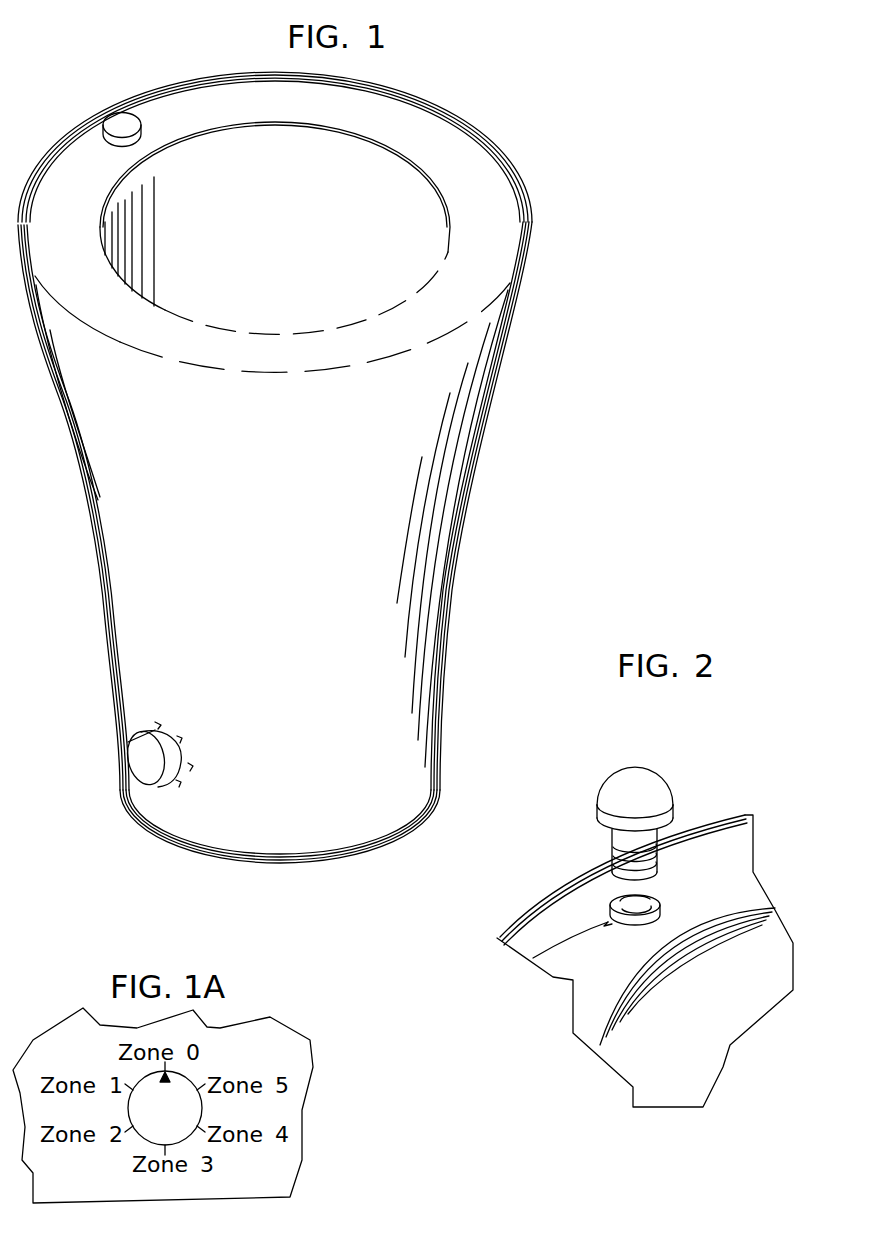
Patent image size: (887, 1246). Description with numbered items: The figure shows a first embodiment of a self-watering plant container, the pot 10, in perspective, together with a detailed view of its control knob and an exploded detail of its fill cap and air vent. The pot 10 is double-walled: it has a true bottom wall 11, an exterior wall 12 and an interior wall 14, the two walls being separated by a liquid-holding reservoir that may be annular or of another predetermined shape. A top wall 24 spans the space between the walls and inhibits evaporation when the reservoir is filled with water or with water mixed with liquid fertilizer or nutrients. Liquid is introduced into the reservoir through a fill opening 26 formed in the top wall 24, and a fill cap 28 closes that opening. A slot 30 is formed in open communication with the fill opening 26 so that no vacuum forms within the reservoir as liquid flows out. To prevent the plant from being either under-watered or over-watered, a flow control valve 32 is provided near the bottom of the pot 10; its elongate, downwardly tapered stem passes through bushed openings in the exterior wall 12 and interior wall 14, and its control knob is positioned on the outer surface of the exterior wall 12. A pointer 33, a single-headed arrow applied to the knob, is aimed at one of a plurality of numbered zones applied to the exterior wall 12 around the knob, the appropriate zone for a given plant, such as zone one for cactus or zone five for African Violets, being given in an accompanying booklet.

In FIG. 1, the pot 10 is at (614, 110).
In FIG. 1, the true bottom wall 11 is at (272, 862).
In FIG. 1, the exterior wall 12 is at (477, 445).
In FIG. 1, the interior wall 14 is at (407, 247).
In FIG. 2, the interior wall 14 is at (713, 1032).
In FIG. 1, the top wall 24 is at (418, 125).
In FIG. 2, the top wall 24 is at (577, 912).
In FIG. 2, the fill opening 26 is at (660, 902).
In FIG. 1, the fill cap 28 is at (122, 125).
In FIG. 2, the fill cap 28 is at (618, 773).
In FIG. 2, the slot 30 is at (533, 958).
In FIG. 1, the flow control valve 32 is at (128, 772).
In FIG. 1, the pointer 33 is at (134, 747).